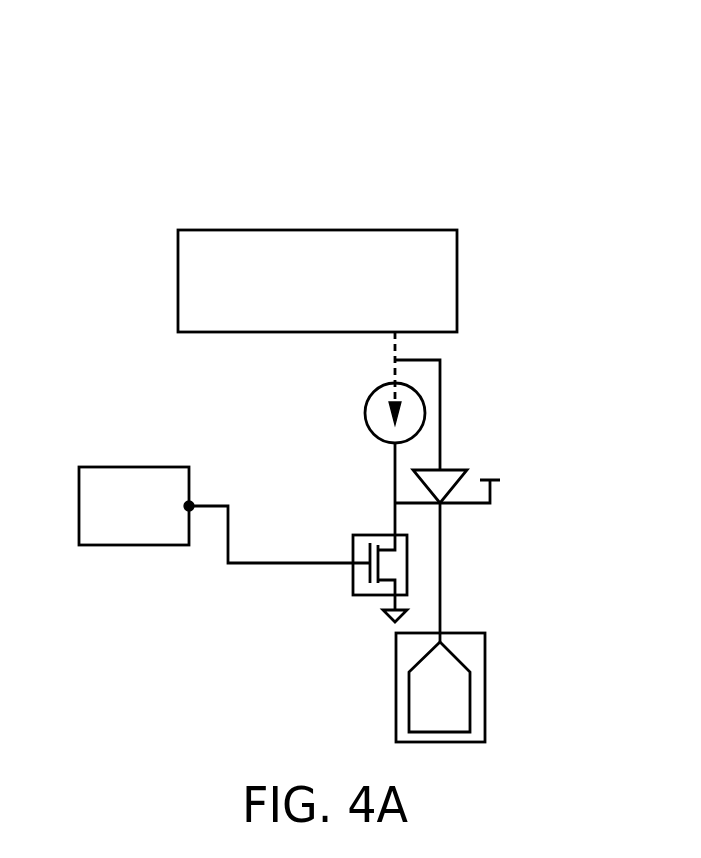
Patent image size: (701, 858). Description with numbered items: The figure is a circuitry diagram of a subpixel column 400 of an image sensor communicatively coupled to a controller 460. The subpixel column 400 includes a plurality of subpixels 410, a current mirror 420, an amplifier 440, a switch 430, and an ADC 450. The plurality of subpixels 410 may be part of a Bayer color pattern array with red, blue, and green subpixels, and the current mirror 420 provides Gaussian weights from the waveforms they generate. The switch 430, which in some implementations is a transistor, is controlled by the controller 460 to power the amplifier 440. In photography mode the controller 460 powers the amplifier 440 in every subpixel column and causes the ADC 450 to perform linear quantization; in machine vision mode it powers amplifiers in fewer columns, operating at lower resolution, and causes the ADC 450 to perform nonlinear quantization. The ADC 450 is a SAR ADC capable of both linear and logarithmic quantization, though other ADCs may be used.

The subpixel column 400 is at (108, 90).
The plurality of subpixels 410 is at (178, 280).
The current mirror 420 is at (372, 394).
The switch 430 is at (353, 550).
The amplifier 440 is at (457, 466).
The ADC 450 is at (485, 688).
The controller 460 is at (79, 505).